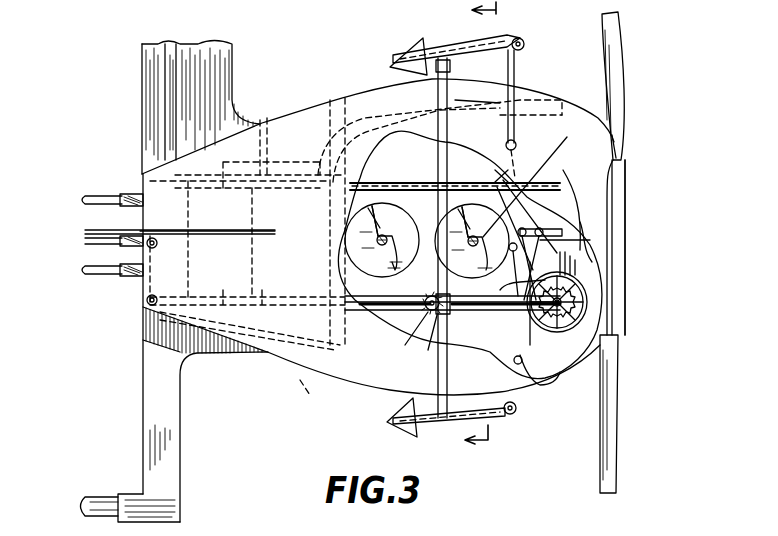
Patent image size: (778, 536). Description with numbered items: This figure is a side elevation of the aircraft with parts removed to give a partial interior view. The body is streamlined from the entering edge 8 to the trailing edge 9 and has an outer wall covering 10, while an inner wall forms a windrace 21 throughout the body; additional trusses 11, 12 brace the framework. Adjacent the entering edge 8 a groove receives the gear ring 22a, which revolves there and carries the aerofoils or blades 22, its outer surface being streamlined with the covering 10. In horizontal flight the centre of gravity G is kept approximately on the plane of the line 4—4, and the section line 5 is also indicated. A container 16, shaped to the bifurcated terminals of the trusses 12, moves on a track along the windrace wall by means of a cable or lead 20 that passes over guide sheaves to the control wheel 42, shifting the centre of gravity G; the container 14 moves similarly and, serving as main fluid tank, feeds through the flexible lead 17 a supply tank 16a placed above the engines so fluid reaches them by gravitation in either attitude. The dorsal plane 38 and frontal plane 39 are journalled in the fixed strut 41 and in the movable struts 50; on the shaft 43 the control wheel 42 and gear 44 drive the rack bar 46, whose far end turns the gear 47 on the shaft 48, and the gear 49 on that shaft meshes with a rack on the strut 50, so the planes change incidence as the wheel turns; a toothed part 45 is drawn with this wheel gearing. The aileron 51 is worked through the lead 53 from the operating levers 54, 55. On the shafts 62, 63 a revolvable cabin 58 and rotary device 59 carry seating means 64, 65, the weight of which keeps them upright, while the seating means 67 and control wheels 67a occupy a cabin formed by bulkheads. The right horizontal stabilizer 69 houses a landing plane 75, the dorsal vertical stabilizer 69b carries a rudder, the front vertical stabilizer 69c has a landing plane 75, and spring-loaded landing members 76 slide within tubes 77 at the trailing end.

The line 4— 4 is at (489, 222).
The section line 5 is at (425, 203).
The entering edge 8 is at (625, 296).
The trailing edge 9 is at (143, 290).
The covering 10 is at (240, 335).
The truss 11 is at (353, 97).
The truss 12 is at (273, 120).
The load carrying container 14 is at (310, 125).
The container 16 is at (300, 360).
The supply or feed tank 16a is at (533, 107).
The flexible pipe or lead 17 is at (470, 98).
The cable or lead 20 is at (305, 375).
The windrace 21 is at (472, 173).
The aerofoils or blades 22 is at (620, 97).
The gear ring 22a is at (608, 162).
The dorsal plane 38 is at (460, 42).
The frontal plane 39 is at (440, 418).
The leading fixed strut 41 is at (514, 72).
The control wheel 42 is at (598, 350).
The shaft 43 is at (560, 340).
The gear 44 is at (590, 316).
The gear 45 is at (590, 285).
The rack bar 46 is at (462, 290).
The gear 47 is at (405, 345).
The shaft 48 is at (428, 350).
The gear 49 is at (438, 307).
The movable strut 50 is at (441, 58).
The aileron 51 is at (407, 58).
The lead 53 is at (522, 48).
The operating lever 54 is at (573, 210).
The operating lever 55 is at (580, 240).
The revolvable cabin or device 58 is at (548, 225).
The rotary device 59 is at (357, 258).
The shaft 62 is at (520, 225).
The shaft 63 is at (378, 238).
The seating means 64 is at (505, 180).
The seating means 65 is at (381, 210).
The seating means 67 is at (535, 268).
The control wheels 67a is at (581, 263).
The right horizontal stabilizer 69 is at (230, 231).
The dorsal vertical stabilizer 69b is at (233, 72).
The front vertical stabilizer 69c is at (168, 455).
The landing plane or member 75 is at (97, 228).
The member 76 is at (88, 200).
The tube 77 is at (128, 194).
The centre of gravity G is at (535, 230).